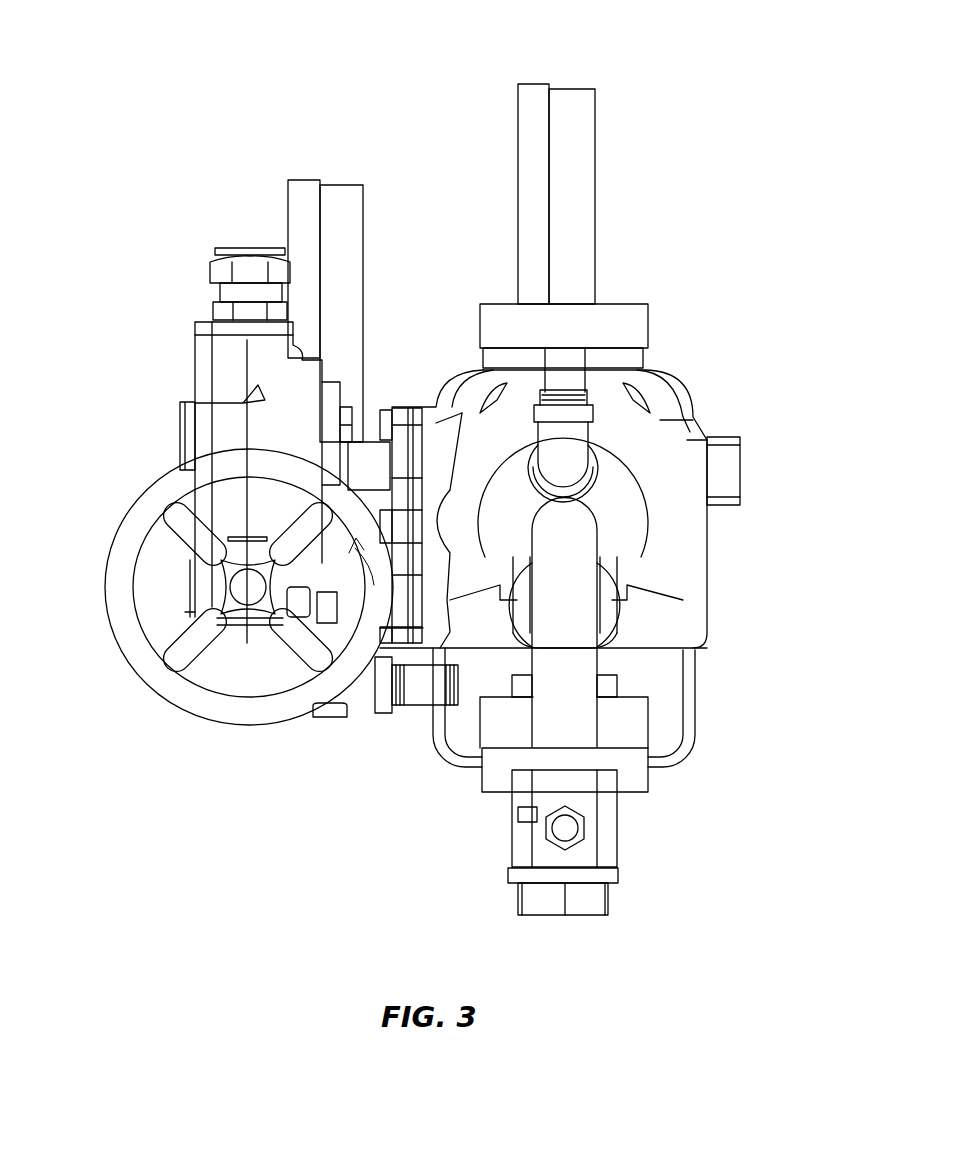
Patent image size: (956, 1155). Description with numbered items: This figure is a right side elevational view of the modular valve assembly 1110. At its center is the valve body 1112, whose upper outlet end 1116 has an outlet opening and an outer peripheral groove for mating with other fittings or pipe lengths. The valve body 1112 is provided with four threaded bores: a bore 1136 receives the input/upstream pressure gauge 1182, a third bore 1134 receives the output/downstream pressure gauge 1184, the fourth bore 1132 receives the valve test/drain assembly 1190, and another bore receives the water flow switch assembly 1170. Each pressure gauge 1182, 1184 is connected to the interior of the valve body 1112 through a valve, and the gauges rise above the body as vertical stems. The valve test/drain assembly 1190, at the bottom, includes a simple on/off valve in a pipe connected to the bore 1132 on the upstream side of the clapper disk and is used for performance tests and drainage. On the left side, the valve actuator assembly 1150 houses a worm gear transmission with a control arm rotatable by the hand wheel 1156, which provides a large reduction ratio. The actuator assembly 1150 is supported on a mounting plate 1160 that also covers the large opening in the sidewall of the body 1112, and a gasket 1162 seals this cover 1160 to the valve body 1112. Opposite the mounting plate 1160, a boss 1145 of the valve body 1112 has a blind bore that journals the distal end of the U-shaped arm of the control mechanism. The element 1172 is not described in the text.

The valve assembly 1110 is at (296, 55).
The valve body 1112 is at (625, 515).
The outlet end 1116 is at (625, 304).
The fourth bore 1132 is at (600, 590).
The third bore 1134 is at (578, 458).
The bore 1136 is at (468, 703).
The boss 1145 is at (745, 472).
The valve actuator assembly 1150 is at (195, 376).
The hand wheel 1156 is at (128, 536).
The mounting plate 1160 is at (405, 407).
The gasket 1162 is at (413, 407).
The water flow switch assembly 1170 is at (697, 708).
The upper housing 1172 is at (673, 398).
The input/upstream pressure gauge 1182 is at (343, 185).
The output/downstream pressure gauge 1184 is at (573, 88).
The valve test/drain assembly 1190 is at (577, 918).